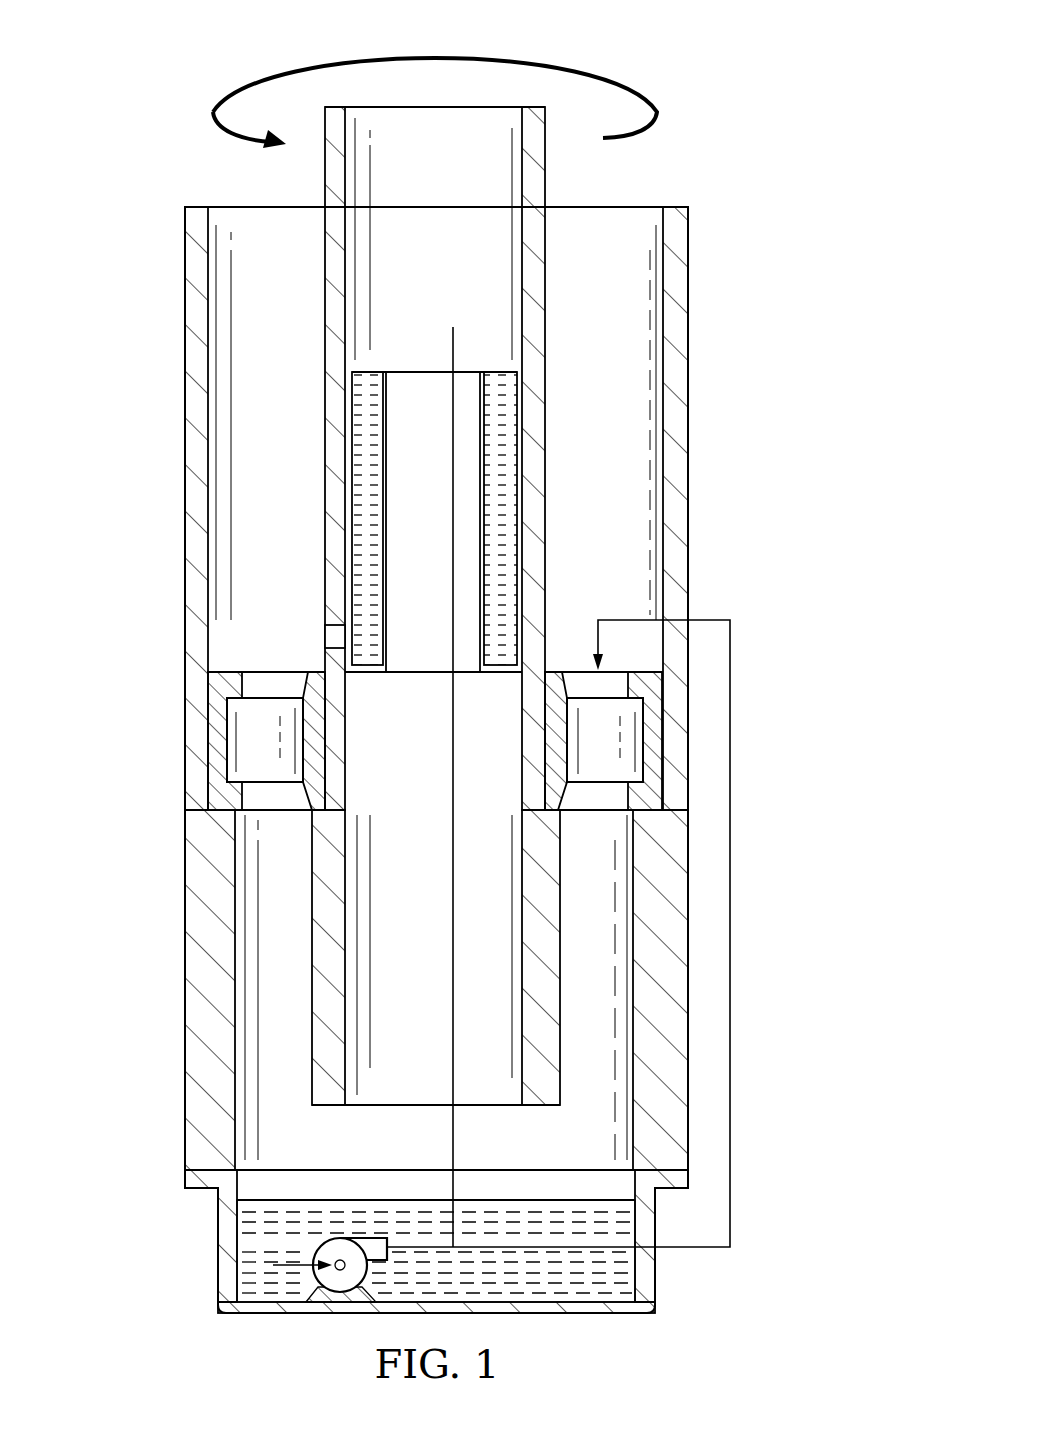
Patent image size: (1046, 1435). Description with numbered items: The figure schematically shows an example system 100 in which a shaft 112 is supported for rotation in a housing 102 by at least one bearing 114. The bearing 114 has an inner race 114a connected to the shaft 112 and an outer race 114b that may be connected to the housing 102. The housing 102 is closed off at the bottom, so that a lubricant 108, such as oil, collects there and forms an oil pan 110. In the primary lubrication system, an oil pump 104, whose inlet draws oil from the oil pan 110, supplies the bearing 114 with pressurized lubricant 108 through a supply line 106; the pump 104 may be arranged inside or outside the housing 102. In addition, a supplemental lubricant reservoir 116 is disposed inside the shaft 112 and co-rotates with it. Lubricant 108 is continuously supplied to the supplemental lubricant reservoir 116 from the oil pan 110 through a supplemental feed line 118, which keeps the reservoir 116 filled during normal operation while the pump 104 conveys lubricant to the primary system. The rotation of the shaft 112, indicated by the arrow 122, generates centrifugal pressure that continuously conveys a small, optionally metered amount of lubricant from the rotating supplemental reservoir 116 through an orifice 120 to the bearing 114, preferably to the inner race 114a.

The system 100 is at (138, 130).
The housing 102 is at (185, 462).
The oil pump 104 is at (340, 1238).
The supply line 106 is at (730, 937).
The lubricant 108 is at (515, 1205).
The oil pan 110 is at (225, 1236).
The shaft 112 is at (545, 520).
The bearing 114 is at (228, 655).
The inner race 114a is at (320, 727).
The outer race 114b is at (218, 742).
The supplemental lubricant reservoir 116 is at (365, 372).
The supplemental feed line 118 is at (453, 946).
The orifice 120 is at (330, 640).
The arrow 122 is at (362, 57).